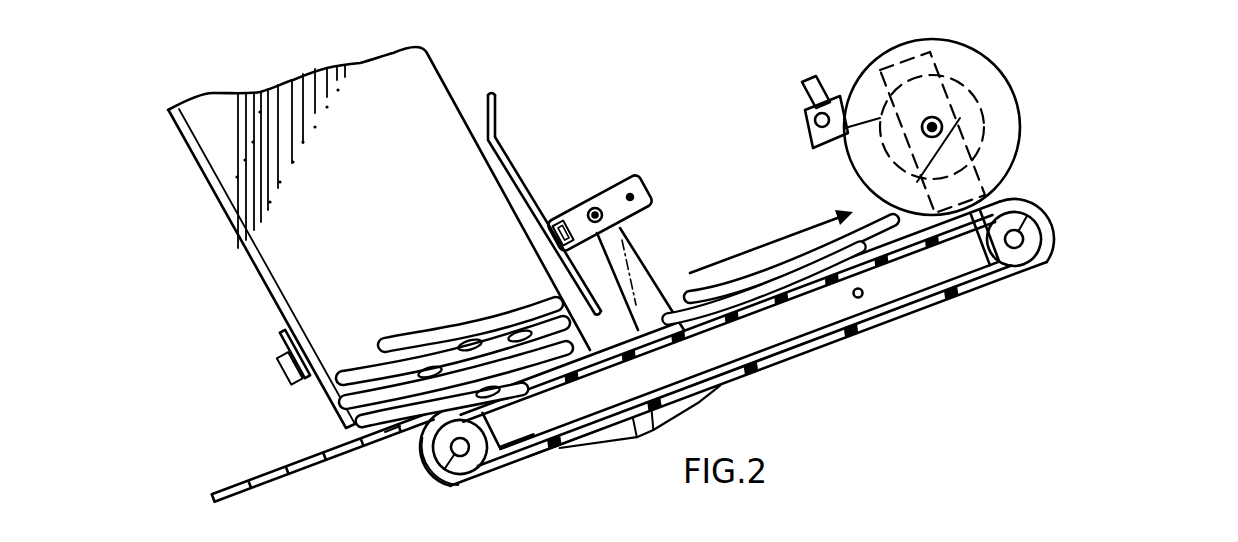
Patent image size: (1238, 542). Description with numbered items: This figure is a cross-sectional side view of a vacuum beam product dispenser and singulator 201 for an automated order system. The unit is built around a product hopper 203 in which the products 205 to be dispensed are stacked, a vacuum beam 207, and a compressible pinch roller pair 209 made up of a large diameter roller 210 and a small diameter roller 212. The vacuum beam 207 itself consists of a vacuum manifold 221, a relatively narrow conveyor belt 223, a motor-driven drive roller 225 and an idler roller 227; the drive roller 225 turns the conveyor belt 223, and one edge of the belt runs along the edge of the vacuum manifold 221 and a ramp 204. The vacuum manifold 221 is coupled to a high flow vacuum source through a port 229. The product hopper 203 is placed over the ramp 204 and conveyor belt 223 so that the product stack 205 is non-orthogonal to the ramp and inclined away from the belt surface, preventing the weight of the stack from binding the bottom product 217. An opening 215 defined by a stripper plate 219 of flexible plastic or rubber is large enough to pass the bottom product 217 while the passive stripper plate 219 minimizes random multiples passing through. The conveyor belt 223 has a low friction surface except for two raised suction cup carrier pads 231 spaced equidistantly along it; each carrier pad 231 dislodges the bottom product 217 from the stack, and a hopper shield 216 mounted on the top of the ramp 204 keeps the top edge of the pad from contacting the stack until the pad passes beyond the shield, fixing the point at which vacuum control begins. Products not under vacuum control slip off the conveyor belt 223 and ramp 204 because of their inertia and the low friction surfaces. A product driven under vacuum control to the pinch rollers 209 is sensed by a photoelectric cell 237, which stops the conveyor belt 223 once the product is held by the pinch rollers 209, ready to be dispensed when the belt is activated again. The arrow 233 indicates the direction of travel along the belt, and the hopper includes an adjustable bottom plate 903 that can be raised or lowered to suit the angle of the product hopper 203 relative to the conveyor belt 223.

The vacuum beam product dispenser and singulator 201 is at (669, 316).
The product hopper 203 is at (518, 115).
The ramp 204 is at (245, 484).
The products 205 is at (375, 300).
The vacuum beam 207 is at (461, 481).
The compressible pinch roller pair 209 is at (939, 124).
The large diameter roller 210 is at (870, 76).
The small diameter roller 212 is at (973, 98).
The opening 215 is at (512, 350).
The hopper shield 216 is at (393, 432).
The bottom product 217 is at (405, 380).
The stripper plate 219 is at (568, 300).
The vacuum manifold 221 is at (755, 333).
The conveyor belt 223 is at (518, 463).
The drive roller 225 is at (431, 462).
The idler roller 227 is at (1050, 221).
The port 229 is at (875, 295).
The suction cup carrier pad 231 is at (737, 287).
The direction of travel 233 is at (800, 278).
The photoelectric cell 237 is at (812, 142).
The adjustable bottom plate 903 is at (327, 408).